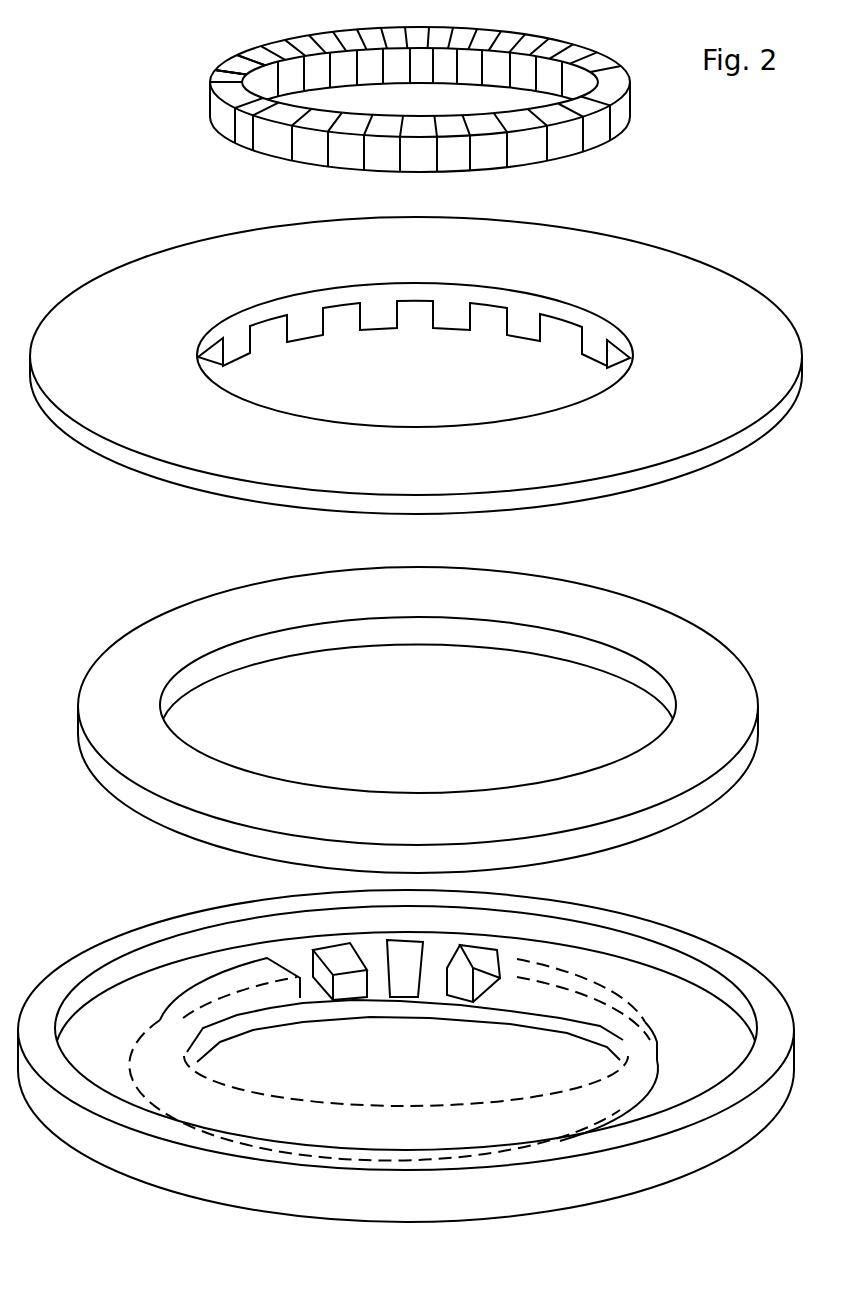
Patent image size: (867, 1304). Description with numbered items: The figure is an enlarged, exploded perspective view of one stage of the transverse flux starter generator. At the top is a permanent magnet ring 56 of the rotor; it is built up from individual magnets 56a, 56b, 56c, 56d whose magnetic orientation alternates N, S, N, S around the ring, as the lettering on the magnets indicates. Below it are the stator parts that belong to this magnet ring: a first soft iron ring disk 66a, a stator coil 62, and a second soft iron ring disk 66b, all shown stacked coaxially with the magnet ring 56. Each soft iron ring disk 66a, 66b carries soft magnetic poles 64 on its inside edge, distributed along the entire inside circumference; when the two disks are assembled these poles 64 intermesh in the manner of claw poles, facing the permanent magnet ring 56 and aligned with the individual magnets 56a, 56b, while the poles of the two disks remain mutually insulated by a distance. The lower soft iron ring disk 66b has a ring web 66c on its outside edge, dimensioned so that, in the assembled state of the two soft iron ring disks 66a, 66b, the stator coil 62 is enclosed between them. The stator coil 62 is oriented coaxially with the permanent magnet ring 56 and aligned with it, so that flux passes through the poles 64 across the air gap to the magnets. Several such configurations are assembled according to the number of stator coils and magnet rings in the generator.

The permanent magnet ring 56 is at (630, 118).
The individual magnet 56a is at (243, 48).
The individual magnet 56b is at (210, 80).
The magnet segment 56c is at (215, 125).
The magnet segment 56d is at (243, 147).
The soft iron ring disk 66a is at (215, 292).
The poles 64 is at (510, 978).
The stator coil 62 is at (625, 632).
The soft iron ring disk 66b is at (118, 1028).
The ring web 66c is at (777, 1020).